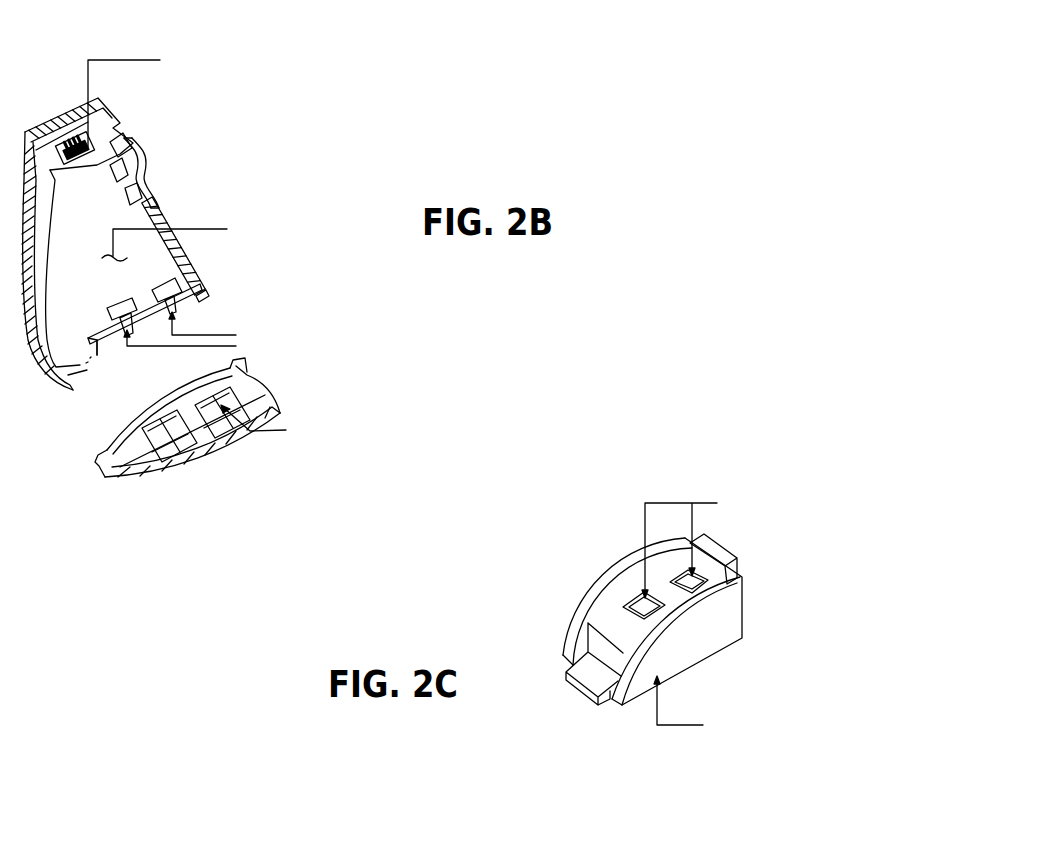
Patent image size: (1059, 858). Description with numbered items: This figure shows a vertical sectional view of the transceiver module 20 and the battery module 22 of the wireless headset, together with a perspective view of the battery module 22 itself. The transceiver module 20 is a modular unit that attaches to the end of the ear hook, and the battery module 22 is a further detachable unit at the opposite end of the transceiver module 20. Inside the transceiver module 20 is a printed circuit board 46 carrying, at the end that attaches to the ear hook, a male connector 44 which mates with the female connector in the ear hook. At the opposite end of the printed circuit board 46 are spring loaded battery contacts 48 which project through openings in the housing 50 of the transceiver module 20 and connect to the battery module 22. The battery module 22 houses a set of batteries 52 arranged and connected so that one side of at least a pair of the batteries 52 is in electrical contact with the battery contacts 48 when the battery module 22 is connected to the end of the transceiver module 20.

In FIG. 2B, the male connector 44 is at (62, 143).
In FIG. 2B, the transceiver module 20 is at (117, 133).
In FIG. 2B, the printed circuit board 46 is at (132, 218).
In FIG. 2B, the housing 50 is at (200, 283).
In FIG. 2B, the battery contacts 48 is at (187, 296).
In FIG. 2B, the batteries 52 is at (158, 407).
In FIG. 2B, the battery module 22 is at (148, 477).
In FIG. 2C, the battery module 22 is at (578, 619).